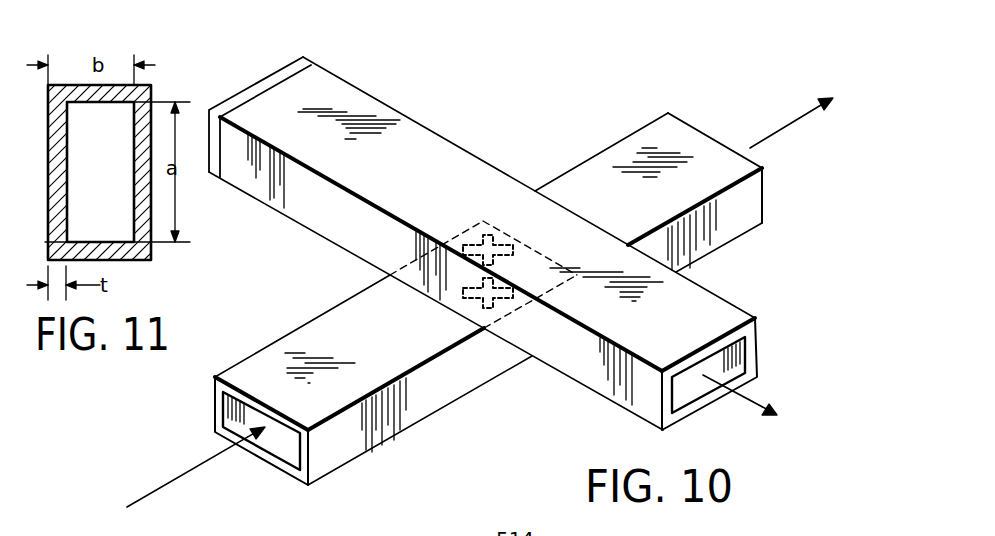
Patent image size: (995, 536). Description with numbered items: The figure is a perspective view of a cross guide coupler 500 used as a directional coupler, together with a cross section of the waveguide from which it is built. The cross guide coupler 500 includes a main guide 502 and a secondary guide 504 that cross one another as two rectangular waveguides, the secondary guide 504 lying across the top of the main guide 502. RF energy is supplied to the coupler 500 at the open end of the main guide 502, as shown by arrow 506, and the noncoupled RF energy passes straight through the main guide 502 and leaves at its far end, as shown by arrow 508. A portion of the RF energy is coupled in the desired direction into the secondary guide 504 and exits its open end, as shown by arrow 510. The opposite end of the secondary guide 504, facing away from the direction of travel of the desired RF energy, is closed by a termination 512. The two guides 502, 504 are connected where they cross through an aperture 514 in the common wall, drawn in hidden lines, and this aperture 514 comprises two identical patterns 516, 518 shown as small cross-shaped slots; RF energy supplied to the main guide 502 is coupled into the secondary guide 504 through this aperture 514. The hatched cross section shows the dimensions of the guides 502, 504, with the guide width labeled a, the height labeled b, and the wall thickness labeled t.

The cross guide coupler 500 is at (503, 73).
The main guide 502 is at (433, 392).
The secondary guide 504 is at (707, 312).
The arrow 506 is at (207, 463).
The arrow 508 is at (797, 118).
The arrow 510 is at (744, 397).
The termination 512 is at (303, 58).
The aperture 514 is at (501, 222).
The pattern 516 is at (465, 229).
The pattern 518 is at (458, 306).